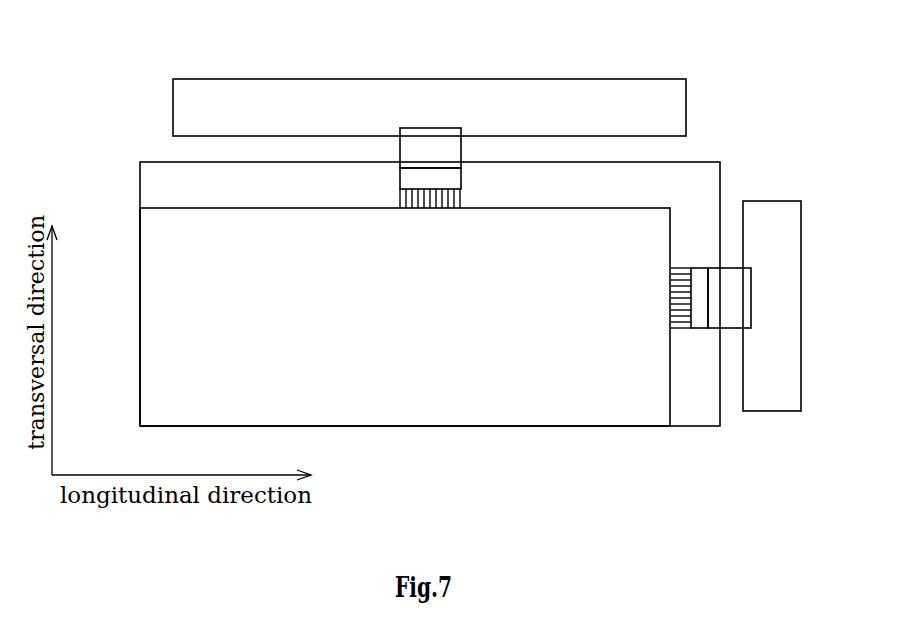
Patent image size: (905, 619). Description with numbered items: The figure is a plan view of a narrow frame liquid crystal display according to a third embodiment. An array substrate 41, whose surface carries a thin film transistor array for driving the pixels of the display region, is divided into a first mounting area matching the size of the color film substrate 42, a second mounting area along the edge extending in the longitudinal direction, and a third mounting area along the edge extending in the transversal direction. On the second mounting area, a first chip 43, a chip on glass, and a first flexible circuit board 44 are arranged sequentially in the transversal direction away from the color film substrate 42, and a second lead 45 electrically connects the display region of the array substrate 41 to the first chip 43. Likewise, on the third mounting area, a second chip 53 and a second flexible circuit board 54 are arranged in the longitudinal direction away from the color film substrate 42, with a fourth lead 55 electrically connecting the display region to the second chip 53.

The array substrate 41 is at (673, 184).
The color film substrate 42 is at (158, 318).
The first chip 43 is at (407, 180).
The first flexible circuit board 44 is at (445, 143).
The second lead 45 is at (460, 192).
The second chip 53 is at (702, 314).
The second flexible circuit board 54 is at (735, 312).
The fourth lead 55 is at (683, 268).